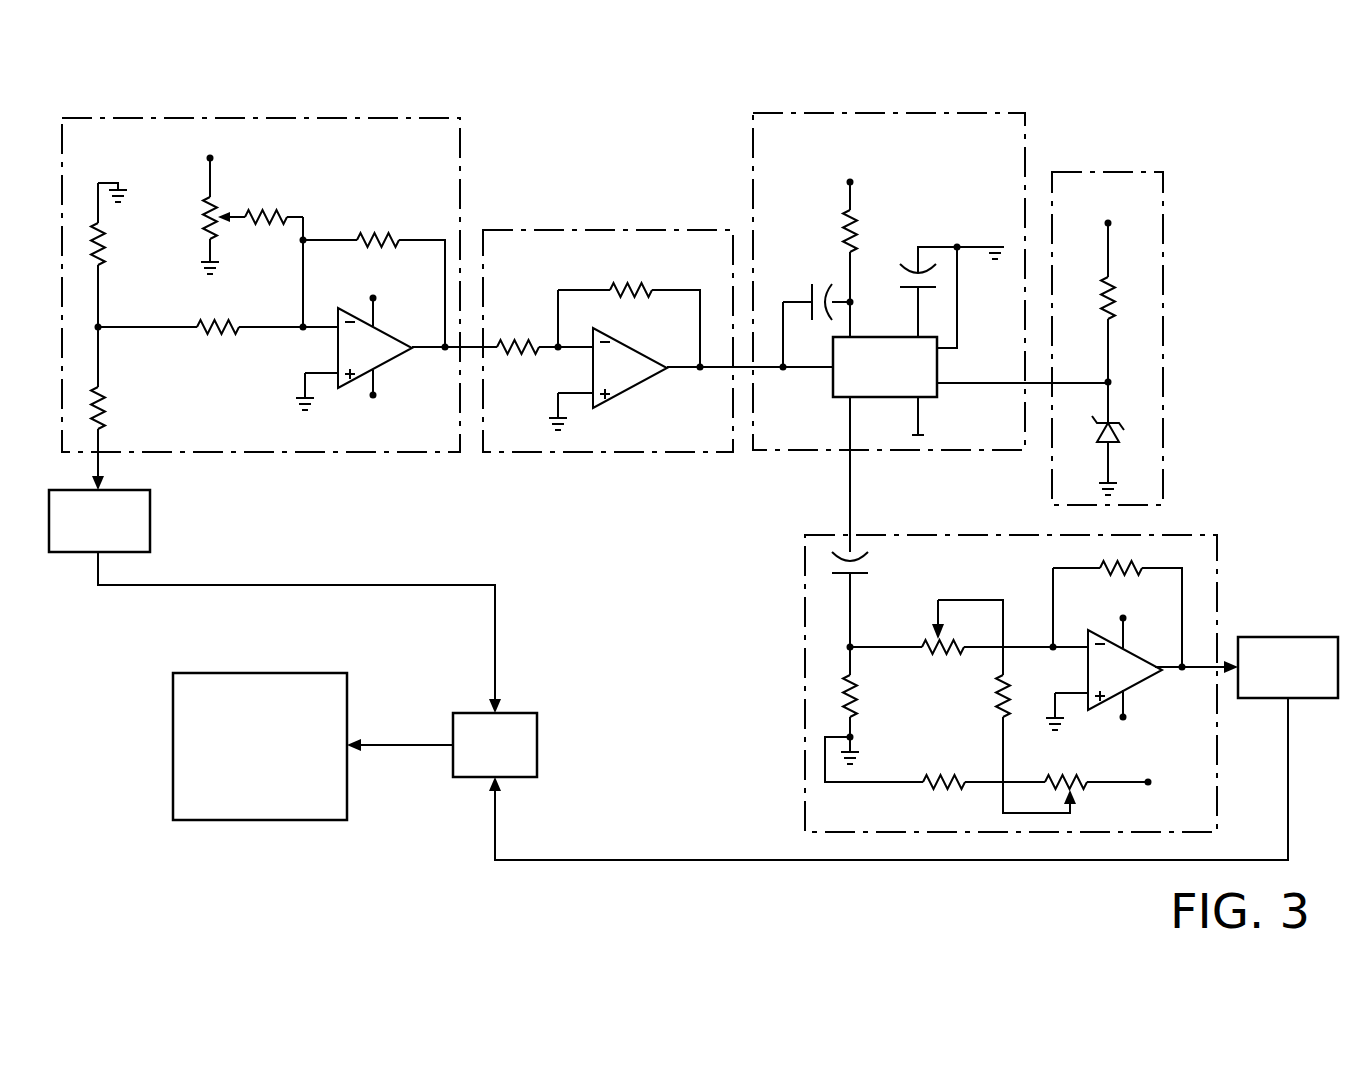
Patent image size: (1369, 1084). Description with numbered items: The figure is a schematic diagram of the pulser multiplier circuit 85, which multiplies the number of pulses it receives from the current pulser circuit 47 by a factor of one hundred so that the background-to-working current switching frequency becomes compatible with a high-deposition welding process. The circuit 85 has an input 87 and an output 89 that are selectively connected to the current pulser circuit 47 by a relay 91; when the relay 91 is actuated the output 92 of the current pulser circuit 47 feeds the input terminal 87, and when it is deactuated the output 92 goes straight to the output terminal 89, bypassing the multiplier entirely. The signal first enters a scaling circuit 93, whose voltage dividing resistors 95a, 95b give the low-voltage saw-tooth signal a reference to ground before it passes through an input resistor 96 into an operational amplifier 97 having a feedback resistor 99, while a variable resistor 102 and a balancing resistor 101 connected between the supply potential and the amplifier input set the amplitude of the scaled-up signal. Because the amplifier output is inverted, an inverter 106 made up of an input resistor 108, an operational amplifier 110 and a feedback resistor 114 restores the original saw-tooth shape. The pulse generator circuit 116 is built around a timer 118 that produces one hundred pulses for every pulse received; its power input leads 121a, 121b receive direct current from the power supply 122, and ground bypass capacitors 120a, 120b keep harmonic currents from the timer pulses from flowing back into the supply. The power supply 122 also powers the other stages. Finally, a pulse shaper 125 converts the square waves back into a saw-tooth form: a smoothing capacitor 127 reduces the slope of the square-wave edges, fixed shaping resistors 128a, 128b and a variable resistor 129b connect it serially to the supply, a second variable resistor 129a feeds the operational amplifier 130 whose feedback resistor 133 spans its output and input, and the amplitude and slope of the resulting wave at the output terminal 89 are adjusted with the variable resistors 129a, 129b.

The pulser multiplier circuit 85 is at (40, 171).
The scaling circuit 93 is at (462, 165).
The voltage dividing resistor 95a is at (105, 400).
The voltage dividing resistor 95b is at (105, 246).
The input resistor 96 is at (213, 336).
The operational amplifier 97 is at (394, 364).
The feedback resistor 99 is at (382, 236).
The balancing resistor 101 is at (268, 213).
The variable resistor 102 is at (205, 224).
The inverter 106 is at (641, 230).
The input resistor 108 is at (522, 340).
The operational amplifier 110 is at (632, 392).
The feedback resistor 114 is at (641, 286).
The pulse generator circuit 116 is at (1025, 128).
The timer 118 is at (932, 398).
The ground bypass capacitor 120a is at (822, 290).
The ground bypass capacitor 120b is at (906, 266).
The power input lead 121a is at (840, 238).
The power input lead 121b is at (1003, 381).
The power supply 122 is at (1163, 250).
The pulse shaper 125 is at (805, 603).
The smoothing capacitor 127 is at (870, 568).
The fixed shaping resistor 128a is at (850, 690).
The fixed shaping resistor 128b is at (940, 786).
The variable resistor 129a is at (953, 655).
The variable resistor 129b is at (1078, 790).
The operational amplifier 130 is at (1138, 684).
The feedback resistor 133 is at (1106, 564).
The input terminal 87 is at (150, 505).
The output terminal 89 is at (1287, 637).
The relay 91 is at (537, 742).
The output of the current pulser circuit 92 is at (388, 746).
The current pulser circuit 47 is at (173, 768).